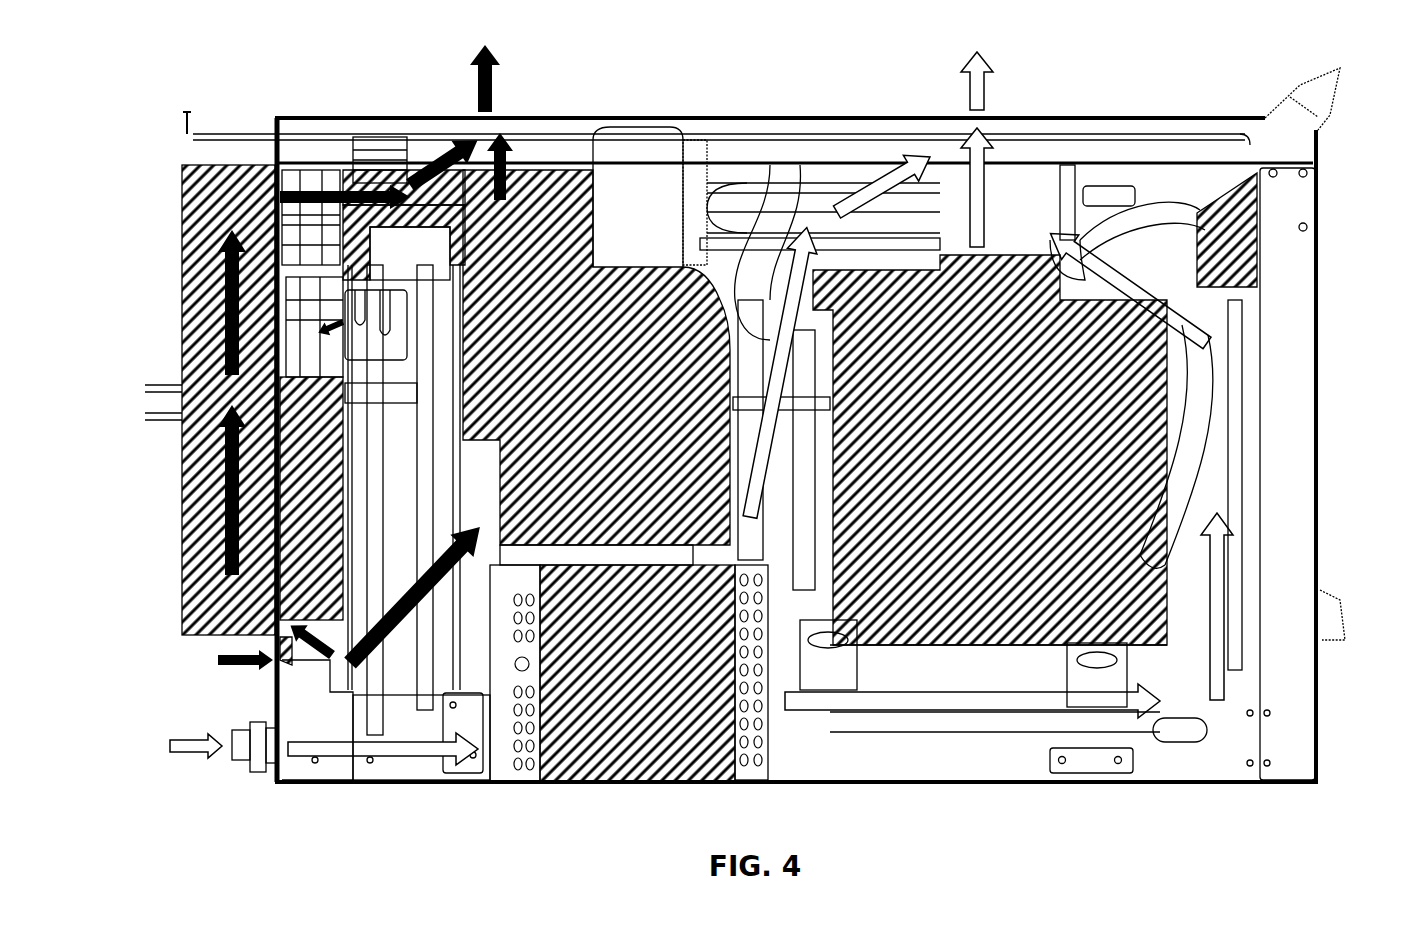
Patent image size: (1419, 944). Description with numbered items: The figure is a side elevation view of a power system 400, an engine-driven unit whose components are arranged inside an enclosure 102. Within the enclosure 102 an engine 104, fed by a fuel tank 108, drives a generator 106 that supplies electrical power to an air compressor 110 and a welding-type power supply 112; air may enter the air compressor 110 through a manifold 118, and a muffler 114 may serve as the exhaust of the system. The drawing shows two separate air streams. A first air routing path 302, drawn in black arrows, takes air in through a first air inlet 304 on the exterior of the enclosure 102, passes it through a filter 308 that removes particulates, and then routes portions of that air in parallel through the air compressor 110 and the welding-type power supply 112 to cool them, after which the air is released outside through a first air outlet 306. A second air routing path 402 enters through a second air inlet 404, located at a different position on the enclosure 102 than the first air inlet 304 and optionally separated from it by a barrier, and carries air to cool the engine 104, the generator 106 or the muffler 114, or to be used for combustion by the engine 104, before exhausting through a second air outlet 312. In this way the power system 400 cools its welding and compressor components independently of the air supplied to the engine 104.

The power system 400 is at (121, 82).
The enclosure 102 is at (1120, 106).
The engine 104 is at (925, 500).
The generator 106 is at (670, 737).
The fuel tank 108 is at (203, 538).
The air compressor 110 is at (668, 315).
The welding-type power supply 112 is at (302, 583).
The muffler 114 is at (1237, 225).
The manifold 118 is at (473, 235).
The first air routing path 302 is at (305, 152).
The first air inlet 304 is at (277, 678).
The first air outlet 306 is at (512, 118).
The filter 308 is at (277, 684).
The second air outlet 312 is at (1000, 118).
The second air routing path 402 is at (805, 230).
The second air inlet 404 is at (233, 757).